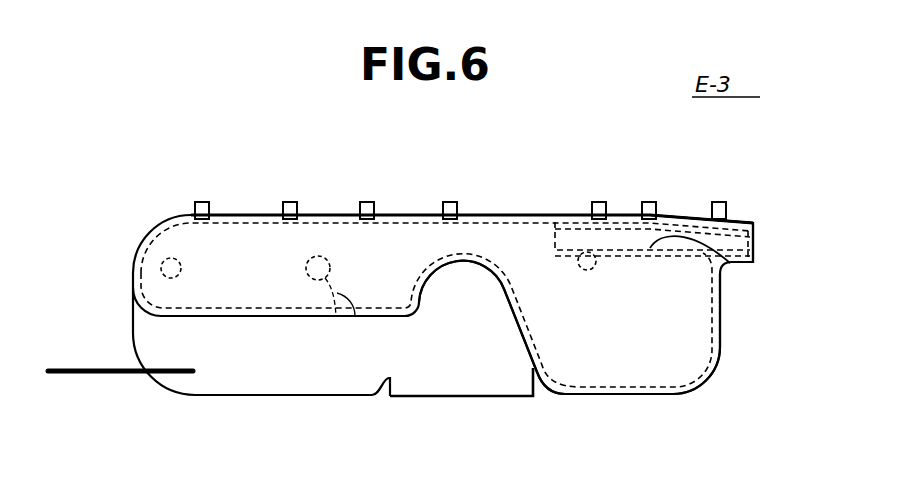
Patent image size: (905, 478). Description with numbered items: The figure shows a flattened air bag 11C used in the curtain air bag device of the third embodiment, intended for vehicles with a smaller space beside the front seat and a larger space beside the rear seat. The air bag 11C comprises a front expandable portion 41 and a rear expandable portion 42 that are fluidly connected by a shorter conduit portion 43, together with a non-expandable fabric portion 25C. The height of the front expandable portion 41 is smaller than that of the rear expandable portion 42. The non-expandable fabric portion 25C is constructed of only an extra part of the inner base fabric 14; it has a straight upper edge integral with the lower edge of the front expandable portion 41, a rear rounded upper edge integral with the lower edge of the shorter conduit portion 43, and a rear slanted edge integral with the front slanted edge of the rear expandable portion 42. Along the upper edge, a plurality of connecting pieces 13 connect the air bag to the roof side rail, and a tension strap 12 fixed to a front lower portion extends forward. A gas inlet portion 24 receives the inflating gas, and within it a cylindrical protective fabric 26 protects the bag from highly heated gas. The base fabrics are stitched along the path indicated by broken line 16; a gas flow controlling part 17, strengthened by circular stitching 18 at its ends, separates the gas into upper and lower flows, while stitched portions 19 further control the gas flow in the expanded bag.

The flattened air bag 11C is at (129, 236).
The tension strap 12 is at (133, 375).
The connecting pieces 13 is at (202, 212).
The inner base fabric 14 is at (277, 397).
The broken line 16 is at (527, 302).
The gas flow controlling part 17 is at (355, 316).
The circular stitching 18 is at (328, 258).
The stitched portions 19 is at (160, 271).
The gas inlet portion 24 is at (745, 236).
The non-expandable fabric portion 25C is at (476, 410).
The cylindrical protective fabric 26 is at (730, 263).
The front expandable portion 41 is at (238, 245).
The rear expandable portion 42 is at (625, 345).
The shorter conduit portion 43 is at (468, 240).